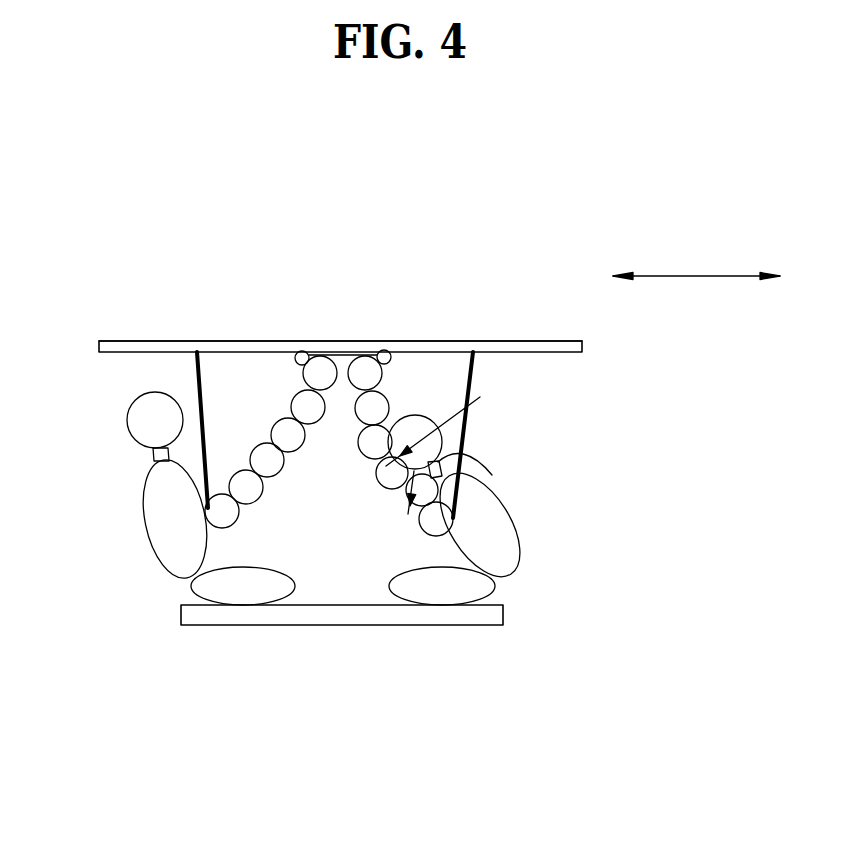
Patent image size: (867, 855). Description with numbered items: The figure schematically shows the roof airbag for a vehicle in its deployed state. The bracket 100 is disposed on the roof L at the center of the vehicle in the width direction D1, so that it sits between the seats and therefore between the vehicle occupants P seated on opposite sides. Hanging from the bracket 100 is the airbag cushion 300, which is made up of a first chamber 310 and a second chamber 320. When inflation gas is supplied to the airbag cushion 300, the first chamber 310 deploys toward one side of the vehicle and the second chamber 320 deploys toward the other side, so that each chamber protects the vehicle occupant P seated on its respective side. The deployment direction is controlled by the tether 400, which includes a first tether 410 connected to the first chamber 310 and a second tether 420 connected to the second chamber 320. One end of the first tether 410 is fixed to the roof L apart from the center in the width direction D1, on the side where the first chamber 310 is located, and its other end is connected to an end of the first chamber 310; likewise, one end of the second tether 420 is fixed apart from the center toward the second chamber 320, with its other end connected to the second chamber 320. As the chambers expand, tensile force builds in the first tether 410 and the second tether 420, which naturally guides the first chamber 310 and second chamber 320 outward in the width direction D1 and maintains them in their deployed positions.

The bracket 100 is at (328, 342).
The roof L is at (162, 342).
The tether 400 is at (335, 310).
The first tether 410 is at (197, 386).
The second tether 420 is at (468, 374).
The airbag cushion 300 is at (334, 582).
The first chamber 310 is at (223, 512).
The second chamber 320 is at (437, 520).
The vehicle occupant P is at (163, 519).
The width direction D1 is at (696, 291).